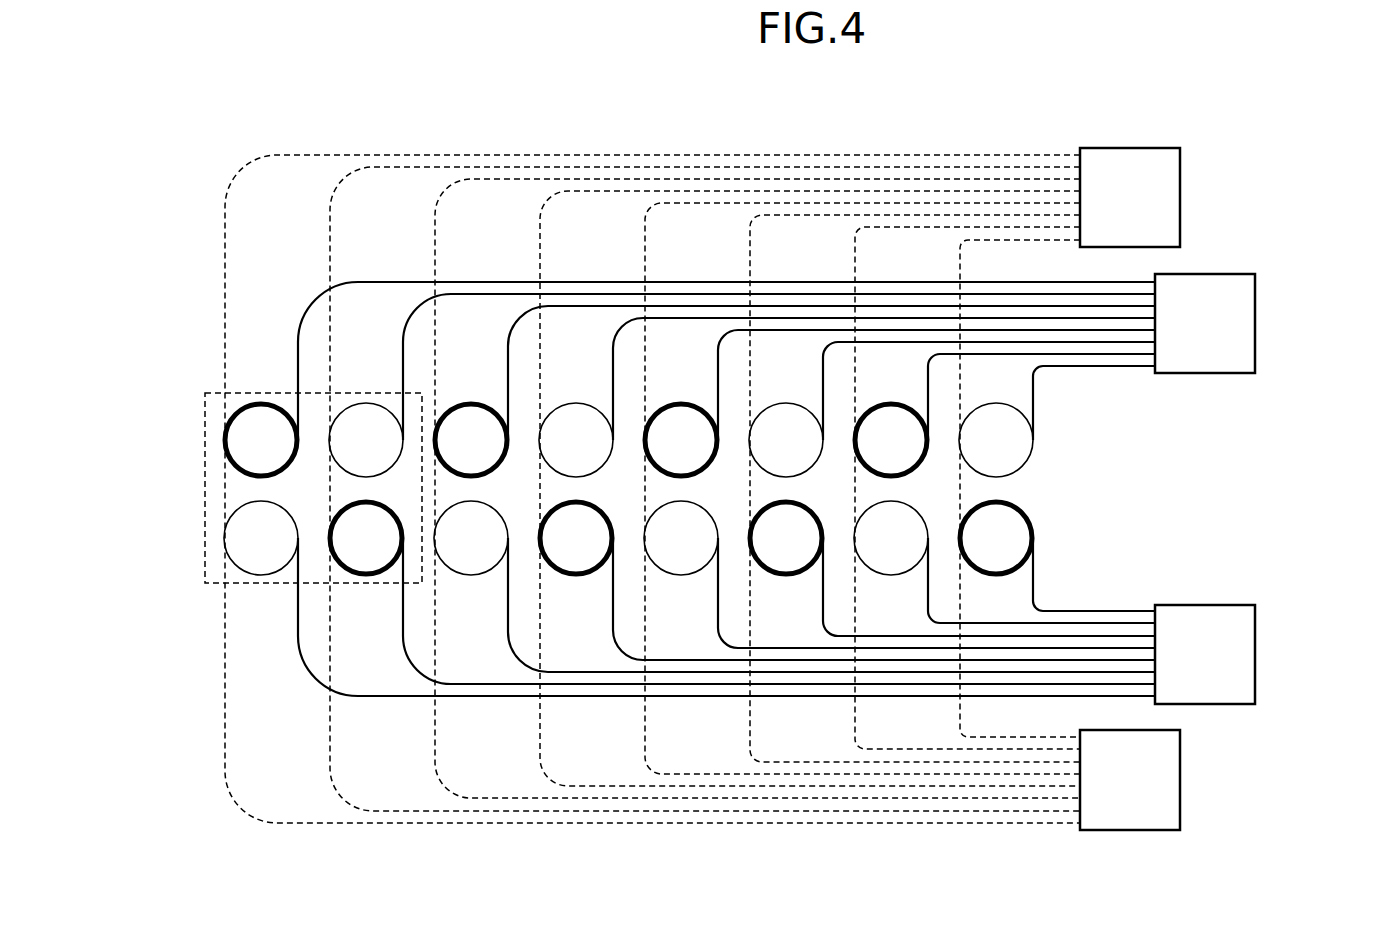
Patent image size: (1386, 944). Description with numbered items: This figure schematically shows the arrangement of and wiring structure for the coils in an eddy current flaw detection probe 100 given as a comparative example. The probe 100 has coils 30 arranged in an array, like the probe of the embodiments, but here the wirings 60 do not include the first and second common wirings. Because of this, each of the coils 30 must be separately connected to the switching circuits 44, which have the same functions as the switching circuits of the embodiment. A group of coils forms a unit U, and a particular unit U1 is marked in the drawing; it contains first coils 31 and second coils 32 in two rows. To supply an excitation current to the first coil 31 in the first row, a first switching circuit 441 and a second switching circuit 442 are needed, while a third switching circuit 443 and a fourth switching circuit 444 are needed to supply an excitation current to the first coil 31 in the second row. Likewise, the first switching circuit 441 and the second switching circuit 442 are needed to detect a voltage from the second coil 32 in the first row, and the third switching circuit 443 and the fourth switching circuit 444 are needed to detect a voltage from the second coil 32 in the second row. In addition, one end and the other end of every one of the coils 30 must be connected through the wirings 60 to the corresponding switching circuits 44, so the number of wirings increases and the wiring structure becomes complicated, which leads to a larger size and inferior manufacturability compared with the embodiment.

The eddy current flaw detection probe 100 is at (1170, 103).
The coils 30 is at (628, 492).
The first coil 31 is at (261, 402).
The second coil 32 is at (366, 402).
The wirings 60 is at (503, 167).
The switching circuits 44 is at (1229, 489).
The first switching circuit 441 is at (1180, 195).
The second switching circuit 442 is at (1255, 322).
The third switching circuit 443 is at (1255, 655).
The fourth switching circuit 444 is at (1180, 785).
The unit U is at (273, 492).
The unit U1 is at (205, 552).